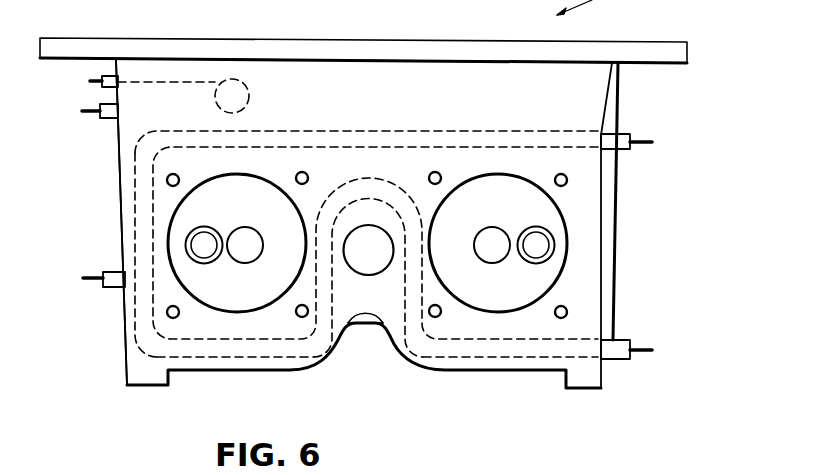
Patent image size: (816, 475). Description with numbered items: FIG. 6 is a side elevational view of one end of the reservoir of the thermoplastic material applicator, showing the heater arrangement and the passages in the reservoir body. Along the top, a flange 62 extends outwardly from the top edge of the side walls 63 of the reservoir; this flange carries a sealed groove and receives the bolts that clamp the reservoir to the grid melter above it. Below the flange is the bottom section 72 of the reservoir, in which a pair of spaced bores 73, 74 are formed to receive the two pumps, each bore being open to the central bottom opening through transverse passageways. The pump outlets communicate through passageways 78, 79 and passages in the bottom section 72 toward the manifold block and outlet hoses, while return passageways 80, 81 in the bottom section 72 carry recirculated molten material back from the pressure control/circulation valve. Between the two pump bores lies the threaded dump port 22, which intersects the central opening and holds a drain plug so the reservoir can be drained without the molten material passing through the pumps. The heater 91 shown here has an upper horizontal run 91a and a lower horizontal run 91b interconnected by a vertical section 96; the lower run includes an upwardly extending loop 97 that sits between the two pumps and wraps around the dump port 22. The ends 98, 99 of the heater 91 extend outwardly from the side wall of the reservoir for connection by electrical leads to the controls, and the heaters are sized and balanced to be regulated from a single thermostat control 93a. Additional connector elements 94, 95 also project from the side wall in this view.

The dump port 22 is at (372, 243).
The flange 62 is at (689, 50).
The side walls 63 is at (620, 105).
The bottom section 72 is at (121, 313).
The bore 73 is at (557, 224).
The bore 74 is at (178, 215).
The passageway 78 is at (532, 262).
The passageway 79 is at (204, 258).
The return passageway 80 is at (492, 229).
The return passageway 81 is at (266, 210).
The heater 91 is at (416, 132).
The upper horizontal run 91a is at (354, 131).
The lower horizontal run 91b is at (486, 356).
The thermostat control 93a is at (252, 97).
The electrical connector 94 is at (94, 102).
The electrical connector 95 is at (86, 281).
The vertical section 96 is at (135, 248).
The loop 97 is at (410, 198).
The end 98 is at (630, 149).
The end 99 is at (632, 340).